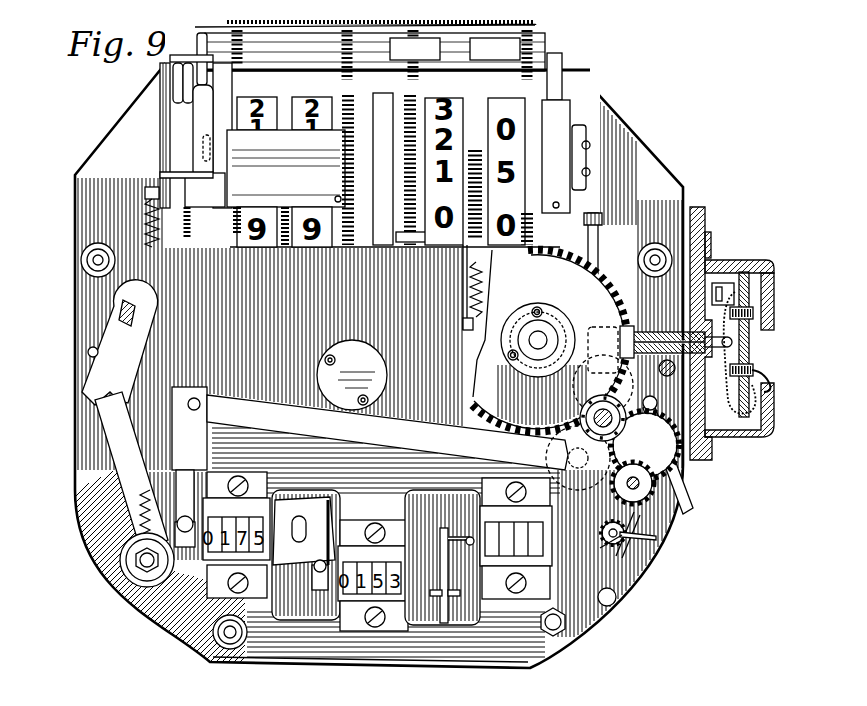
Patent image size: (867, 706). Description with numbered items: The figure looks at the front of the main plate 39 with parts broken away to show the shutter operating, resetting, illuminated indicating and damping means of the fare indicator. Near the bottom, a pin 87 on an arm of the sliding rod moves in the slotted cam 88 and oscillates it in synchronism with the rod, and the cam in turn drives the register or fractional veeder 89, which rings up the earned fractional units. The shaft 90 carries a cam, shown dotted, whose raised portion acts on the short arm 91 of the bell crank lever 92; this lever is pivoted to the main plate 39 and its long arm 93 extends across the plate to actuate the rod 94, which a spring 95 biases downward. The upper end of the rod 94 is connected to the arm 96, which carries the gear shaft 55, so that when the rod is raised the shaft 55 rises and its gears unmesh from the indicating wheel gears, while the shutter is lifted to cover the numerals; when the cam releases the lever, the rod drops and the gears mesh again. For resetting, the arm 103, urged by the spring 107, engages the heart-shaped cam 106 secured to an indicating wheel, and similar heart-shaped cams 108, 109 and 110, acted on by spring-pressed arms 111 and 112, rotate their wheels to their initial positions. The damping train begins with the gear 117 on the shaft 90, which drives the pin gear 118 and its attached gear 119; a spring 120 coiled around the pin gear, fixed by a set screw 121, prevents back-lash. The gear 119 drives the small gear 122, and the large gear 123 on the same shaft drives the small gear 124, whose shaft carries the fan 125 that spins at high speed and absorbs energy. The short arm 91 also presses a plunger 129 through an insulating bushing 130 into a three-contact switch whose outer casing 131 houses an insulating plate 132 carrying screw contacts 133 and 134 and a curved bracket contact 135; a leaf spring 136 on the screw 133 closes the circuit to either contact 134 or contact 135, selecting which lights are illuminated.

The main plate 39 is at (635, 140).
The gear shaft 55 is at (190, 55).
The pin 87 is at (435, 596).
The slotted cam 88 is at (445, 603).
The register or fractional veeder 89 is at (543, 546).
The shaft (cam shaft) 90 is at (539, 338).
The short arm 91 is at (592, 330).
The bell crank lever 92 is at (538, 428).
The long arm 93 is at (370, 467).
The rod 94 is at (167, 142).
The spring 95 is at (140, 223).
The arm 96 is at (180, 95).
The arm 103 is at (206, 123).
The heart-shaped cam 106 is at (210, 170).
The spring 107 is at (214, 88).
The heart-shaped cam 108 is at (358, 160).
The heart-shaped cam 109 is at (388, 245).
The heart-shaped cam 110 is at (558, 215).
The spring-pressed arm 111 is at (582, 118).
The spring-pressed arm 112 is at (410, 242).
The gear 117 is at (579, 273).
The gear (pin gear) 118 is at (587, 410).
The gear 119 is at (608, 408).
The spring 120 is at (648, 492).
The set screw 121 is at (673, 482).
The small gear 122 is at (632, 508).
The large gear 123 is at (642, 513).
The small gear 124 is at (620, 542).
The fan 125 is at (643, 545).
The plunger 129 is at (627, 326).
The insulating bushing 130 is at (666, 333).
The outer casing 131 is at (770, 440).
The insulating plate 132 is at (712, 292).
The screw contact 133 is at (720, 445).
The screw contact 134 is at (768, 262).
The curved bracket contact 135 is at (726, 290).
The leaf spring 136 is at (705, 470).